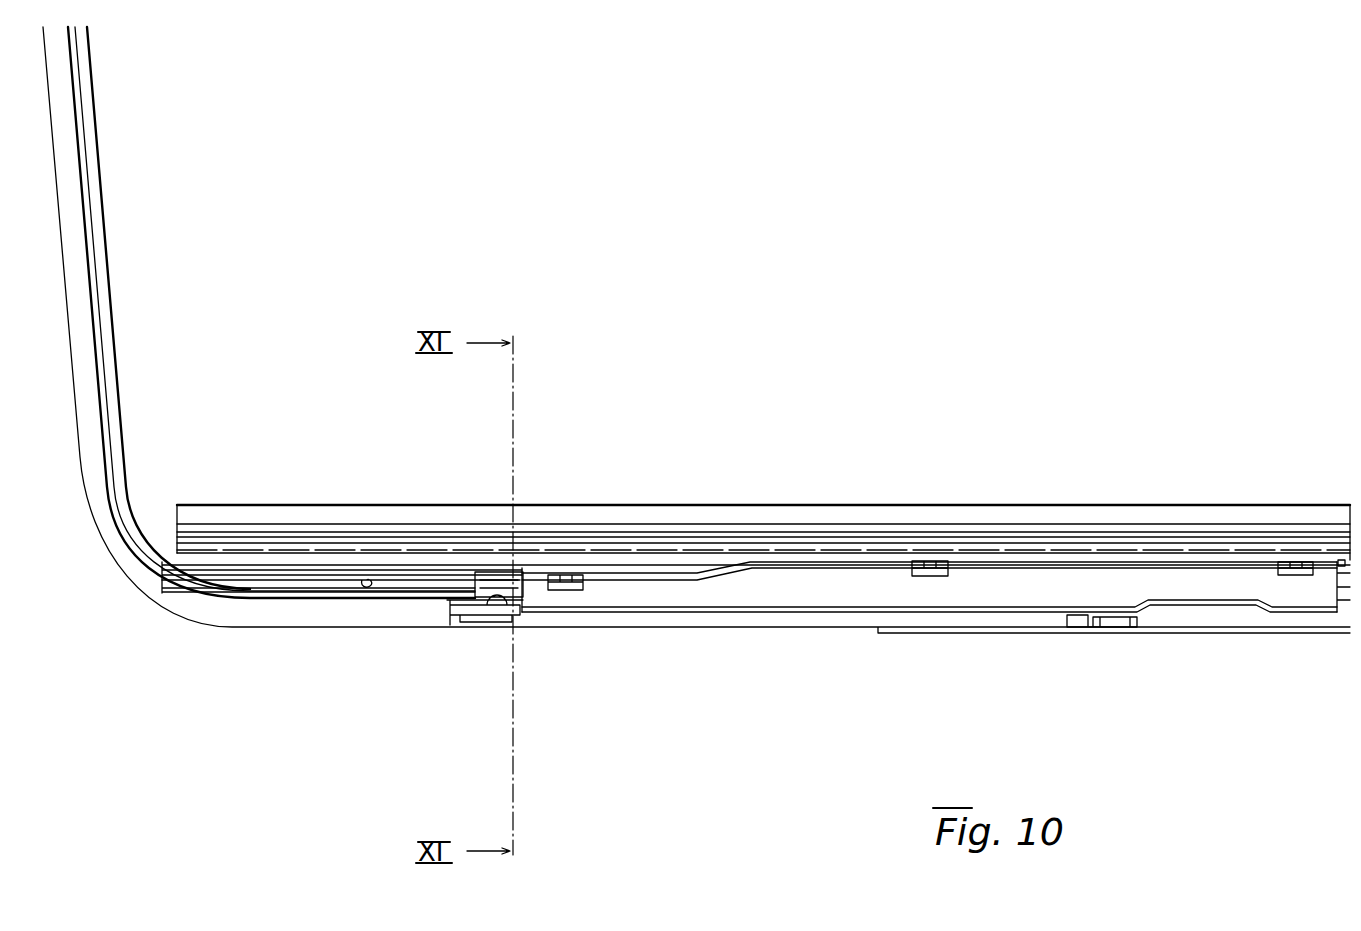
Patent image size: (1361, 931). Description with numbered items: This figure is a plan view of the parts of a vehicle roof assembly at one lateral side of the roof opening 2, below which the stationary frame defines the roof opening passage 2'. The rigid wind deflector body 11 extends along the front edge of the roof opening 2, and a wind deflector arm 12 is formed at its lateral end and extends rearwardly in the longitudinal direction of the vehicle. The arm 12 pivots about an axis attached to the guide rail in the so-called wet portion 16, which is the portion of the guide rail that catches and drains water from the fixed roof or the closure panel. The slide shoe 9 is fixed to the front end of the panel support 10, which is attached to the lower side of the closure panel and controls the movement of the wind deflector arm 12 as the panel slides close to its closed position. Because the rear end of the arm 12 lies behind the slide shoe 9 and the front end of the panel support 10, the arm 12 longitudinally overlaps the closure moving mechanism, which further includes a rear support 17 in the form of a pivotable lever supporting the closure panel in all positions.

The roof opening 2 is at (696, 364).
The roof opening passage 2' is at (763, 477).
The slide shoe 9 is at (450, 625).
The panel support 10 is at (780, 588).
The wind deflector body 11 is at (110, 317).
The wind deflector arm 12 is at (385, 590).
The wet portion 16 is at (320, 617).
The rear support 17 is at (1172, 612).